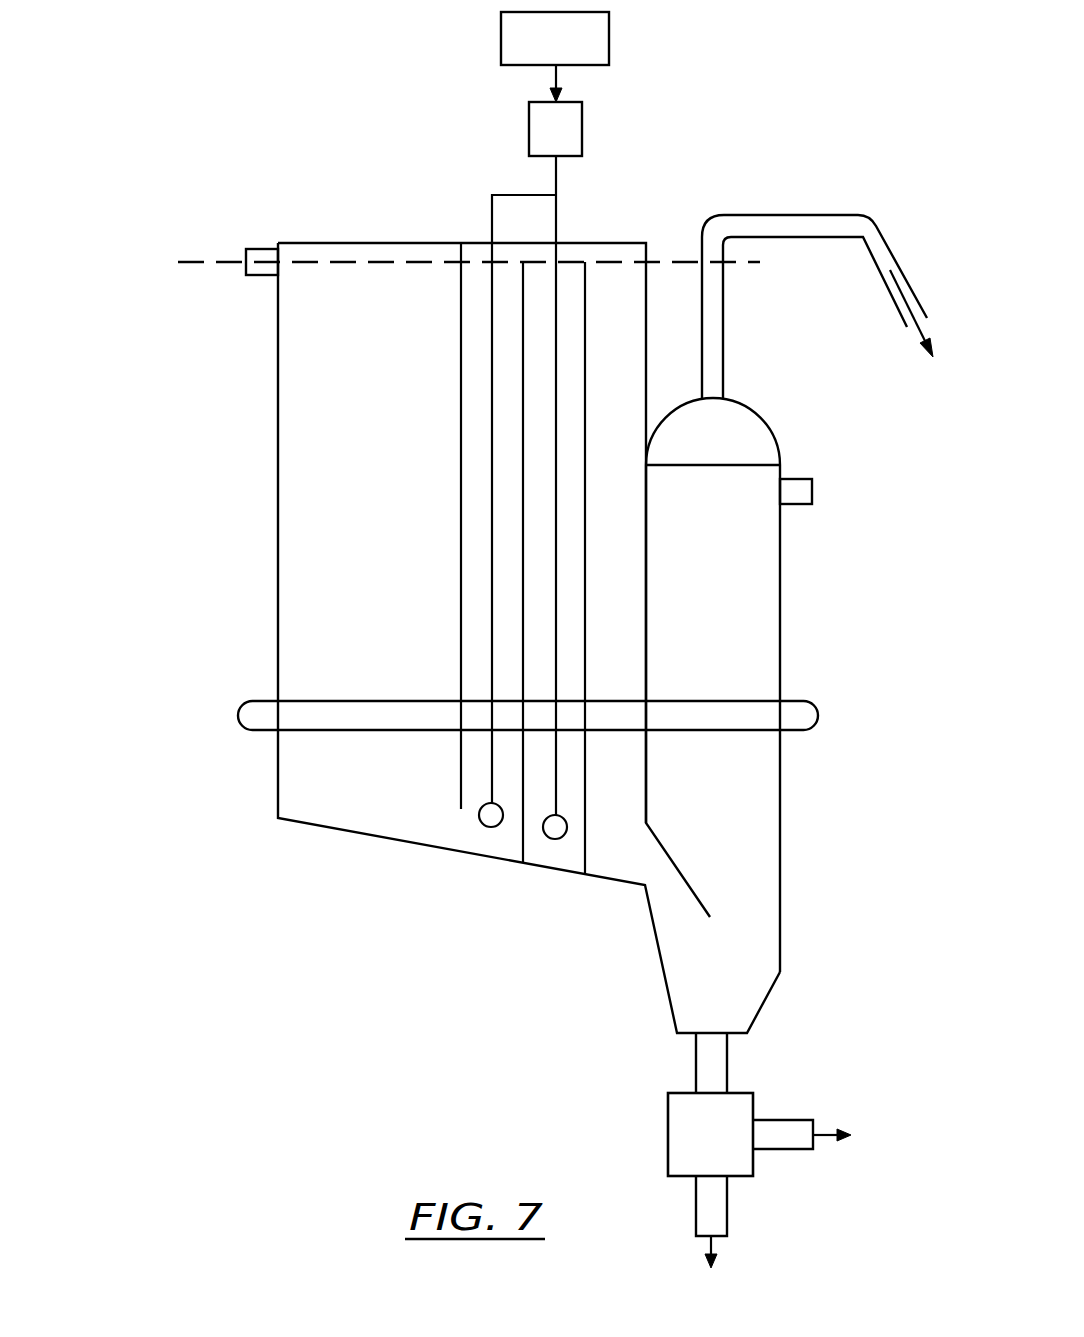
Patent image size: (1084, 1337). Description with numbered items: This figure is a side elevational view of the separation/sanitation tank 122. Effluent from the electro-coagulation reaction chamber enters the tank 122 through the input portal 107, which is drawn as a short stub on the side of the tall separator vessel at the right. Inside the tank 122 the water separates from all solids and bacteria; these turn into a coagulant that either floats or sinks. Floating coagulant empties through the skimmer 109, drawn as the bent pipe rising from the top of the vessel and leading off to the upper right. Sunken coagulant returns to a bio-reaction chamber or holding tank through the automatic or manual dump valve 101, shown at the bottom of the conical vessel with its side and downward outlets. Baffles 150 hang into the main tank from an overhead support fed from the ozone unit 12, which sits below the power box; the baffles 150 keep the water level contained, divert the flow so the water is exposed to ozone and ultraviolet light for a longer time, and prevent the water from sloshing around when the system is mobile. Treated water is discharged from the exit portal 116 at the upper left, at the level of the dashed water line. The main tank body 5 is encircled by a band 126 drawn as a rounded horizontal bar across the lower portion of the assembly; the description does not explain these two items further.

The tank 5 is at (278, 434).
The ozone generator 12 is at (528, 132).
The dump valve 101 is at (738, 1092).
The input portal 107 is at (797, 504).
The skimmer 109 is at (790, 128).
The exit portal 116 is at (266, 248).
The separation/sanitation tank 122 is at (174, 790).
The band 126 is at (264, 700).
The baffles 150 is at (492, 220).